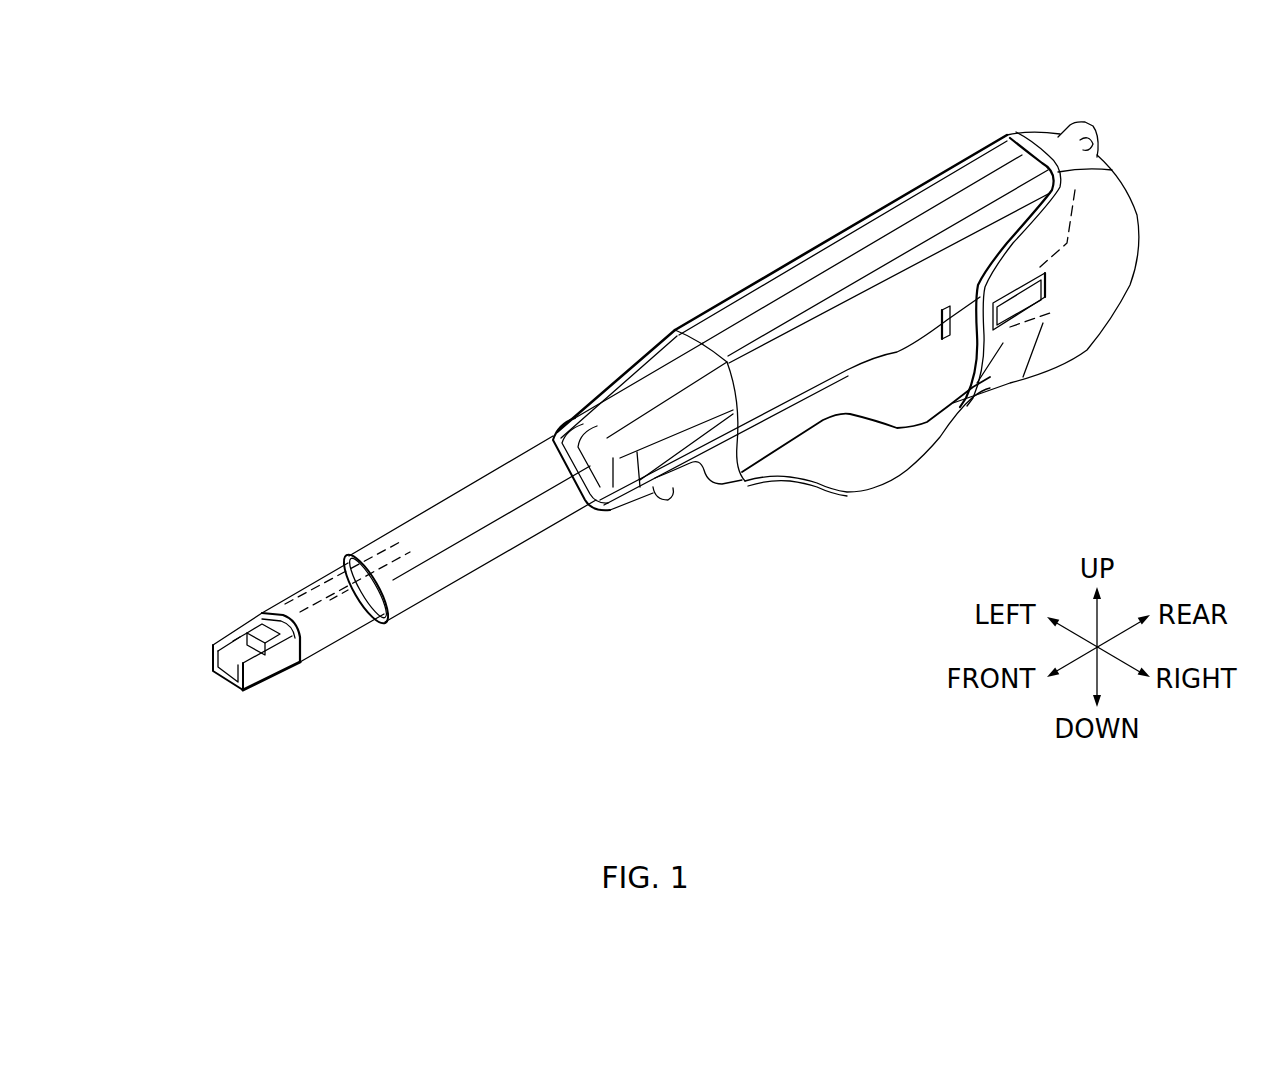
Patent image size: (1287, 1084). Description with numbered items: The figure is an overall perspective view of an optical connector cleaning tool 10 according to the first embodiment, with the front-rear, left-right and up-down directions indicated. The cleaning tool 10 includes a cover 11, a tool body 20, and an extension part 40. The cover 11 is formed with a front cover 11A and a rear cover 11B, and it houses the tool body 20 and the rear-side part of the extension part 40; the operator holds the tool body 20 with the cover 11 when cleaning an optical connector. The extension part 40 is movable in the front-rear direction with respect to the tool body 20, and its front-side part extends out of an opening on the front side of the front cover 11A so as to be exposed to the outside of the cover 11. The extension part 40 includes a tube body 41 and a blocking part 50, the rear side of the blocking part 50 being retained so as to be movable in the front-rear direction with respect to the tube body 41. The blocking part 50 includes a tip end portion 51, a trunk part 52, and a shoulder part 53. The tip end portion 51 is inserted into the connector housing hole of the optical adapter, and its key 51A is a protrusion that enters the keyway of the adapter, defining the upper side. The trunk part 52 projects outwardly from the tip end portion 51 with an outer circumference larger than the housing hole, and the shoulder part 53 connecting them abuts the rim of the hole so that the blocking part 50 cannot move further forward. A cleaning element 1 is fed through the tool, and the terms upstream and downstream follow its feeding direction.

The cleaning element 1 is at (343, 604).
The optical connector cleaning tool 10 is at (462, 176).
The cover 11 is at (813, 137).
The front cover 11A is at (898, 210).
The rear cover 11B is at (1023, 137).
The tool body 20 is at (685, 293).
The extension part 40 is at (430, 461).
The tube body 41 is at (415, 538).
The blocking part 50 is at (272, 490).
The tip end portion 51 is at (237, 637).
The key 51A is at (290, 670).
The trunk part 52 is at (305, 585).
The shoulder part 53 is at (258, 632).